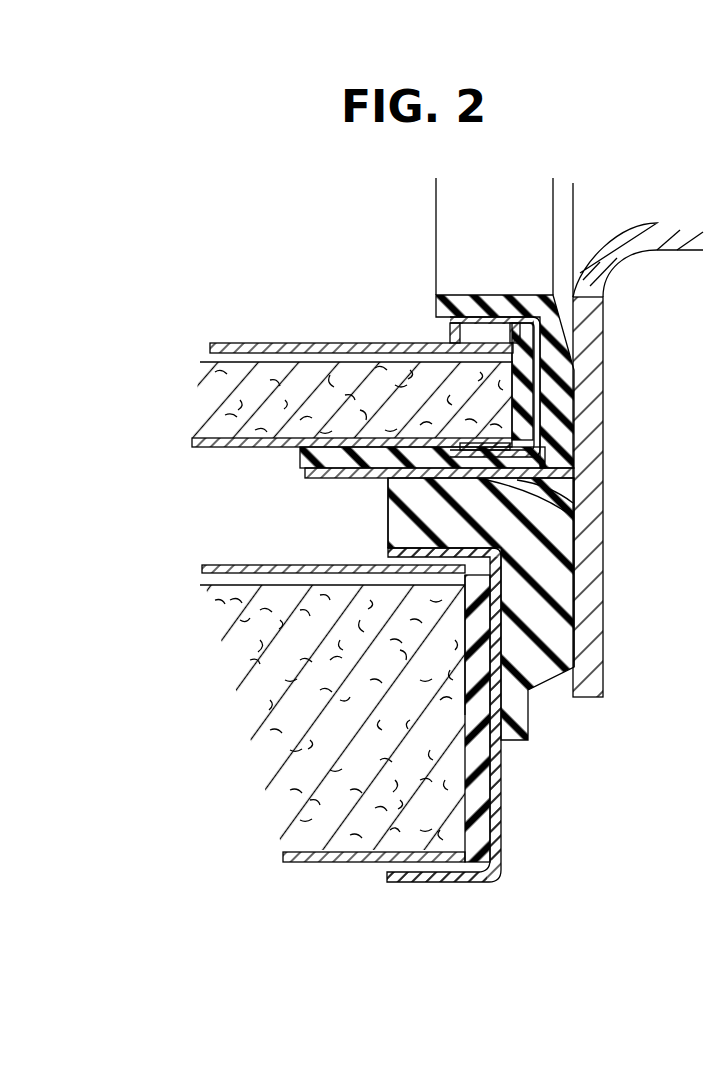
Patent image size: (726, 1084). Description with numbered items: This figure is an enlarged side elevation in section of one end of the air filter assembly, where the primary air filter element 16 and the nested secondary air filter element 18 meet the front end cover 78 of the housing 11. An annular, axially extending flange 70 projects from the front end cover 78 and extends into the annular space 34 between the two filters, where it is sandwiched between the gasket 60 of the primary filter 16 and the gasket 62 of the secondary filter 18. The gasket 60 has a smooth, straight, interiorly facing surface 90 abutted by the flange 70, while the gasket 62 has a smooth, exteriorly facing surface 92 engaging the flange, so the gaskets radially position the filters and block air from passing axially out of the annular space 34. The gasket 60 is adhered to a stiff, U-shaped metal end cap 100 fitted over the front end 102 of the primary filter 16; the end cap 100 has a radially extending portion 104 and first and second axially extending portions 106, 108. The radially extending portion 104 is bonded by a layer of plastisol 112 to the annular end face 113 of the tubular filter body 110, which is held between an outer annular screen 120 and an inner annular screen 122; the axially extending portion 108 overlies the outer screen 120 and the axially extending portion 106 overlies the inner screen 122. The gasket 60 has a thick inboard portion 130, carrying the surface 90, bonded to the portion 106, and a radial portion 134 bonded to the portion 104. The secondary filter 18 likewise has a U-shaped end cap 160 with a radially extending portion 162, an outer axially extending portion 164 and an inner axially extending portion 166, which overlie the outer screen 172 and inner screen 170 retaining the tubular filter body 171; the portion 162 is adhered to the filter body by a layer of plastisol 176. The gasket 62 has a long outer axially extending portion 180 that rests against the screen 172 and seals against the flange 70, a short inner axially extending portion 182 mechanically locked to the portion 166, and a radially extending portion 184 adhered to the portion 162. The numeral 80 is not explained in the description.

The housing 11 is at (624, 342).
The primary air filter element 16 is at (245, 678).
The secondary air filter element 18 is at (225, 380).
The annular space 34 is at (229, 544).
The annular gasket 60 is at (392, 540).
The annular gasket 62 is at (310, 455).
The axially extending flange 70 is at (315, 480).
The front end cover 78 is at (593, 442).
The clip 80 is at (473, 325).
The interiorly facing surface 90 is at (388, 492).
The exteriorly facing surface 92 is at (563, 510).
The metal end cap 100 is at (514, 755).
The front end 102 is at (380, 830).
The radially extending portion 104 is at (503, 780).
The first axially extending portion 106 is at (412, 558).
The second axially extending portion 108 is at (445, 880).
The tubular filter body 110 is at (379, 713).
The layer of plastisol 112 is at (465, 757).
The annular end face 113 is at (467, 657).
The outer annular screen 120 is at (300, 863).
The inner annular screen 122 is at (205, 572).
The inboard portion 130 is at (390, 516).
The radial portion 134 is at (570, 578).
The end cap 160 is at (513, 296).
The radially extending portion 162 is at (580, 384).
The outer axially extending portion 164 is at (480, 452).
The inner axially extending portion 166 is at (478, 330).
The inner screen 170 is at (360, 343).
The tubular filter body 171 is at (290, 378).
The outer screen 172 is at (200, 447).
The layer of plastisol 176 is at (576, 458).
The outer axially extending portion 180 is at (370, 455).
The inner axially extending portion 182 is at (443, 312).
The radially extending portion 184 is at (562, 412).